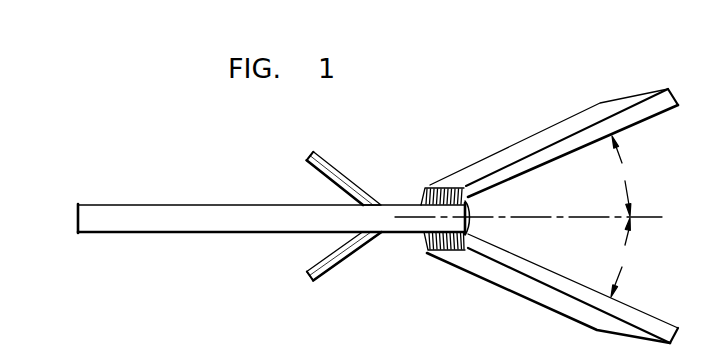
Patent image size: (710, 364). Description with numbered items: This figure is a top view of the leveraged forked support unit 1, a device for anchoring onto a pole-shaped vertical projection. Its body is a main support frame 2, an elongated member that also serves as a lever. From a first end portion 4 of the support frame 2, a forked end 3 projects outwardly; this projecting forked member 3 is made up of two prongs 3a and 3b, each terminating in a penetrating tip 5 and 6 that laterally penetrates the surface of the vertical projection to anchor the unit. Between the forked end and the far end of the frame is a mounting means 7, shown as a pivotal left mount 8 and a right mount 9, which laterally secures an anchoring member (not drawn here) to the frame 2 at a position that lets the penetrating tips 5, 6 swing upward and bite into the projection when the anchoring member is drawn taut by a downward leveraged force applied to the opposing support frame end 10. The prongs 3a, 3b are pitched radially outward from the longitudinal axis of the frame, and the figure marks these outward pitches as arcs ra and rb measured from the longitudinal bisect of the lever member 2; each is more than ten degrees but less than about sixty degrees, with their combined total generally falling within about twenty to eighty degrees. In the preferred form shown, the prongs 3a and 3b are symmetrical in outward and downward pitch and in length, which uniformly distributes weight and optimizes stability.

The leveraged forked support unit 1 is at (165, 192).
The main support frame 2 is at (179, 230).
The forked end 3 is at (563, 218).
The prong 3a is at (519, 288).
The prong 3b is at (515, 152).
The first end portion 4 is at (470, 205).
The penetrating tip 5 is at (640, 338).
The penetrating tip 6 is at (645, 94).
The mounting means 7 is at (324, 207).
The pivotal left mount 8 is at (348, 184).
The right mount 9 is at (355, 253).
The opposing support frame end 10 is at (78, 207).
The arc ra is at (623, 257).
The arc rb is at (625, 176).